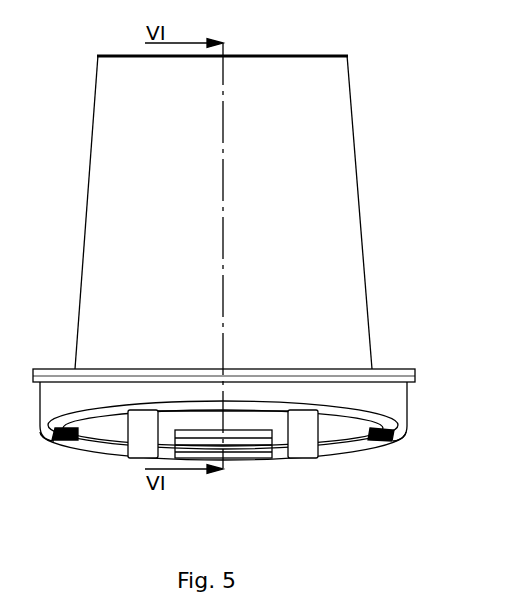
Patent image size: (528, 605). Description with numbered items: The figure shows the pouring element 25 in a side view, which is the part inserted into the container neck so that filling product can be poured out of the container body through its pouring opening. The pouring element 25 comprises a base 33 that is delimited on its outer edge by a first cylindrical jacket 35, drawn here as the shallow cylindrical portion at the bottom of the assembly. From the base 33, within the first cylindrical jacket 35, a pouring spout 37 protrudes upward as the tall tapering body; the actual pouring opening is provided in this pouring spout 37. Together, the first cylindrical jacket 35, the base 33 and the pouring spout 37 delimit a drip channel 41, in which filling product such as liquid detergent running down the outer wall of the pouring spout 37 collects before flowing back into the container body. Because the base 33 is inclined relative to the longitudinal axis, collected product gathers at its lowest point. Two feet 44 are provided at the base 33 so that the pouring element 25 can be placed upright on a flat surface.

The pouring element 25 is at (271, 212).
The pouring spout 37 is at (335, 192).
The drip channel 41 is at (394, 350).
The first cylindrical jacket 35 is at (390, 398).
The base 33 is at (368, 440).
The feet 44 is at (143, 442).